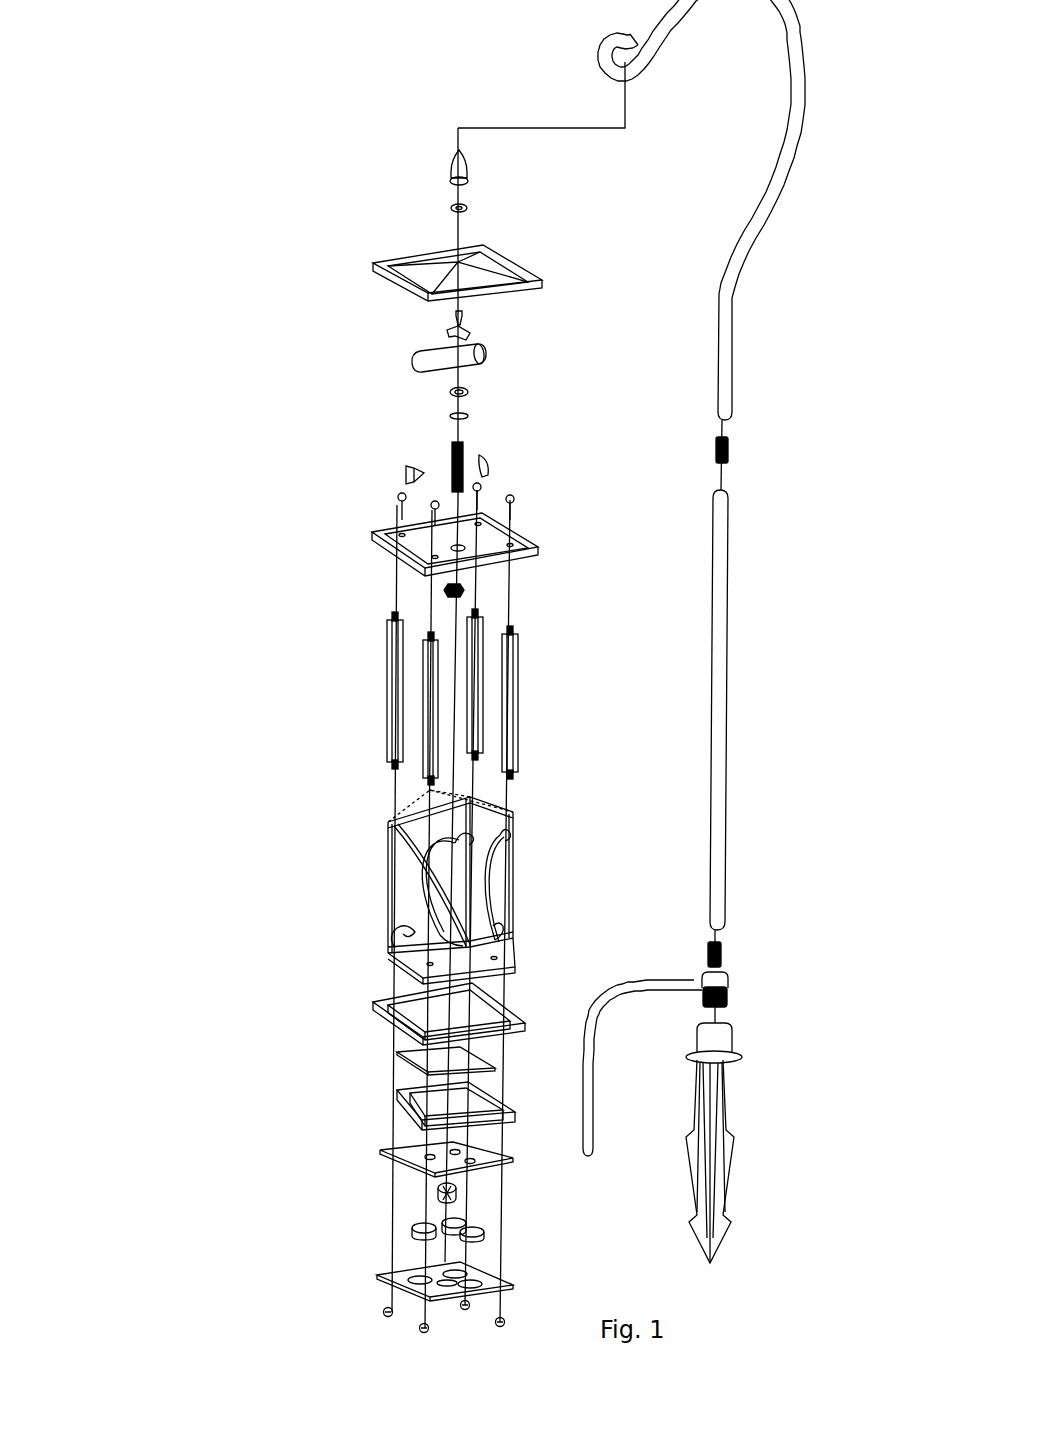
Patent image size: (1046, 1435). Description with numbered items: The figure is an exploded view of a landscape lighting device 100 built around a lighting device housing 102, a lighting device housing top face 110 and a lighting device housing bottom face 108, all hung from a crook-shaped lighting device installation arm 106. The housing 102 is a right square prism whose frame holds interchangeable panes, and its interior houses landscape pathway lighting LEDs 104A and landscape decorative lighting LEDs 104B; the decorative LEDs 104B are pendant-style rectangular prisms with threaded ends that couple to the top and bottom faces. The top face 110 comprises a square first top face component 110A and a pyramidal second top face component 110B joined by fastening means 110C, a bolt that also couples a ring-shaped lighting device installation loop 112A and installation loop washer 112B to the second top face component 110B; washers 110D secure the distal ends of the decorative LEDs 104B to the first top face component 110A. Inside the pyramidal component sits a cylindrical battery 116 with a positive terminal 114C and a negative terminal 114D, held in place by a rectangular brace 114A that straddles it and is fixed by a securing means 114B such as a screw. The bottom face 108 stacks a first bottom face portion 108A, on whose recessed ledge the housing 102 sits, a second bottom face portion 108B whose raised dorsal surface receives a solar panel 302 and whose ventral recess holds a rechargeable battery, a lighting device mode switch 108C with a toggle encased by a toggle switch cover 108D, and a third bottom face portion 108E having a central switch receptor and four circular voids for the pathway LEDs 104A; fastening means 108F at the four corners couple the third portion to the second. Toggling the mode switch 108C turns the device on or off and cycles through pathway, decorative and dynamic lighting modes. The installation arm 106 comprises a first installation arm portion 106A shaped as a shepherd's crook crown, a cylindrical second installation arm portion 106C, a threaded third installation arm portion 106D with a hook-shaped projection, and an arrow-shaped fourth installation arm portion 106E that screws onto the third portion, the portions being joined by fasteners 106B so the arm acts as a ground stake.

The landscape lighting device 100 is at (82, 34).
The lighting device housing 102 is at (515, 888).
The landscape pathway lighting LEDs 104A is at (413, 1228).
The landscape decorative lighting LEDs 104B is at (388, 668).
The lighting device installation arm 106 is at (727, 776).
The first installation arm portion 106A is at (805, 60).
The fastener 106B is at (825, 409).
The second installation arm portion 106C is at (825, 567).
The third installation arm portion 106D is at (825, 962).
The fourth installation arm portion 106E is at (825, 1061).
The lighting device housing bottom face 108 is at (515, 1005).
The first bottom face portion 108A is at (373, 1003).
The second bottom face portion 108B is at (397, 1093).
The lighting device mode switch 108C is at (385, 1155).
The toggle switch cover 108D is at (437, 1190).
The third bottom face portion 108E is at (380, 1280).
The fastening means 108F is at (388, 1316).
The lighting device housing top face 110 is at (522, 533).
The first top face component 110A is at (383, 549).
The second top face component 110B is at (395, 256).
The fastening means 110C is at (462, 448).
The washers 110D is at (398, 498).
The lighting device installation loop 112A is at (450, 172).
The installation loop washer 112B is at (452, 208).
The rectangular brace 114A is at (440, 327).
The securing means 114B is at (440, 312).
The positive terminal 114C is at (405, 473).
The negative terminal 114D is at (560, 445).
The battery 116 is at (412, 363).
The solar panel 302 is at (397, 1053).